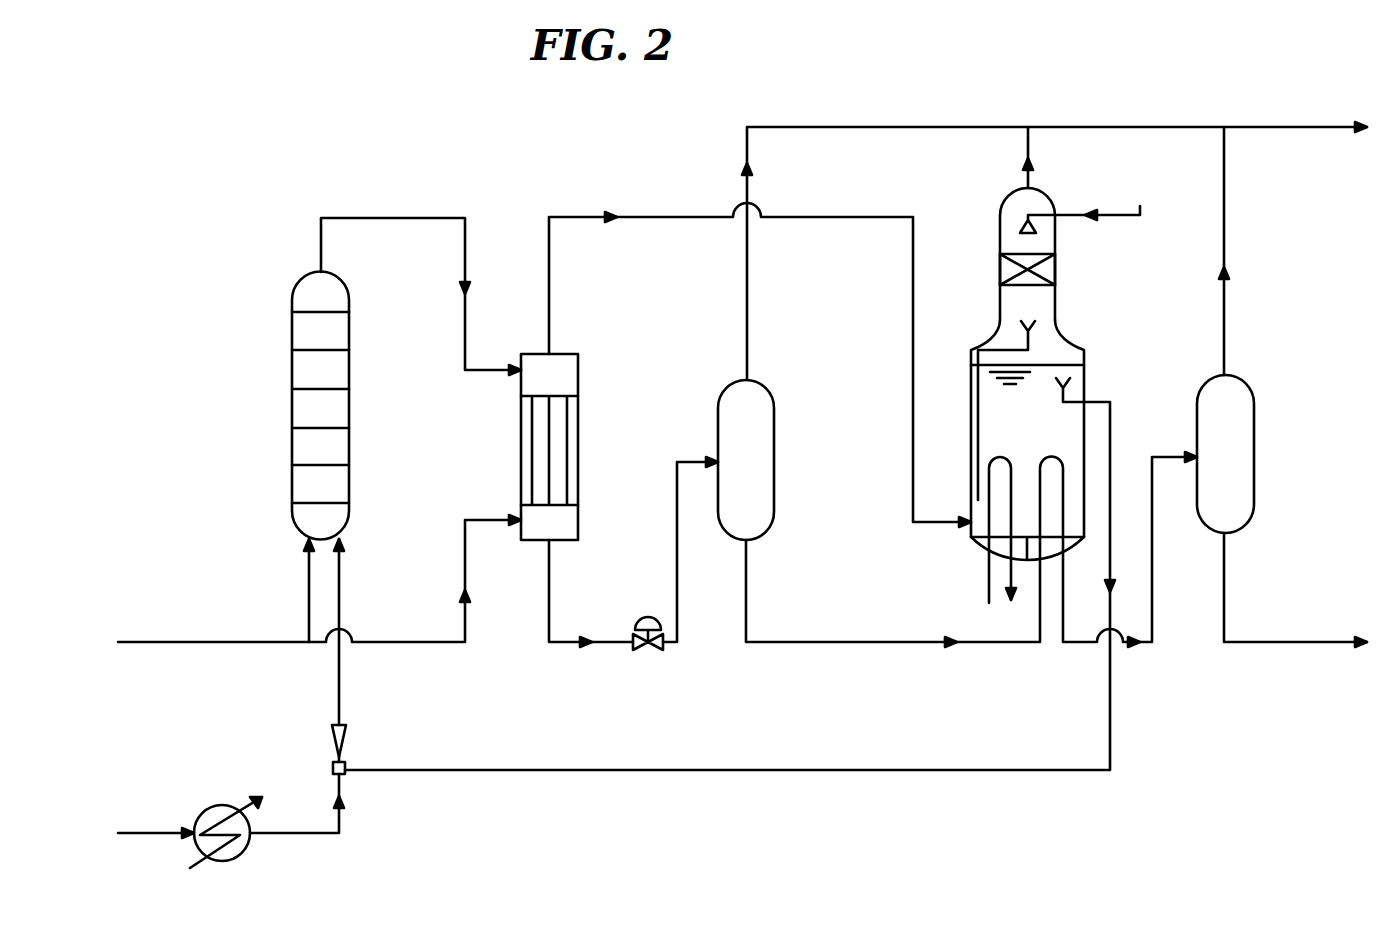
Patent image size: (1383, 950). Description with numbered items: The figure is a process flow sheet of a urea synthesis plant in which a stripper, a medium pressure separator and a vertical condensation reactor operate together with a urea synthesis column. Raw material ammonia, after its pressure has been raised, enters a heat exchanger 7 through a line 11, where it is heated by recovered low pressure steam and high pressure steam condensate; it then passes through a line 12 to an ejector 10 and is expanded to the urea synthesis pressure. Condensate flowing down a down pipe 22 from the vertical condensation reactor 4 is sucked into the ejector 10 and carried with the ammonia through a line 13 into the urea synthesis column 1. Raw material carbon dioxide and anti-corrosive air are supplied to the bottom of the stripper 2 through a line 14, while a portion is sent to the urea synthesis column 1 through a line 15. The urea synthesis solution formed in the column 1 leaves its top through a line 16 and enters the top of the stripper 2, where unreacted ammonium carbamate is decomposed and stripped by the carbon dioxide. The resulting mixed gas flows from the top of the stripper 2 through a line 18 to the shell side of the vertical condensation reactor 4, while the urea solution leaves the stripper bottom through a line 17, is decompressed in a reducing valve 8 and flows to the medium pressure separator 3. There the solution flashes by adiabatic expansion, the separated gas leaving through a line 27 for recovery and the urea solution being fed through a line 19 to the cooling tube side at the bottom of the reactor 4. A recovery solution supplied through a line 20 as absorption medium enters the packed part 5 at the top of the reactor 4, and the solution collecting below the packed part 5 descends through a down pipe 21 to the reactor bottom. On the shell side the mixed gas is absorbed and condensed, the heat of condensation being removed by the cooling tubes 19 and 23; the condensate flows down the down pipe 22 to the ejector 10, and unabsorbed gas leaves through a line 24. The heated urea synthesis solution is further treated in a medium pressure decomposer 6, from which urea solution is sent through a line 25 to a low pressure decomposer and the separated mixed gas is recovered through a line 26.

The urea synthesis column 1 is at (349, 296).
The stripper 2 is at (578, 365).
The medium pressure separator 3 is at (774, 420).
The vertical condensation reactor 4 is at (1078, 335).
The packed part 5 is at (1055, 278).
The medium pressure decomposer 6 is at (1254, 437).
The heat exchanger 7 is at (240, 858).
The reducing valve 8 is at (646, 654).
The ejector 10 is at (346, 730).
The line 11 is at (126, 833).
The line 12 is at (330, 833).
The line 13 is at (339, 576).
The line 14 is at (210, 642).
The line 15 is at (309, 568).
The line 16 is at (432, 218).
The line 17 is at (549, 583).
The line 18 is at (549, 283).
The line 19 is at (843, 642).
The line 20 is at (1136, 215).
The down pipe 21 is at (978, 418).
The down pipe 22 is at (1110, 410).
The cooling tube 23 is at (989, 580).
The line 24 is at (1028, 170).
The line 25 is at (1224, 570).
The line 26 is at (1224, 212).
The line 27 is at (747, 275).